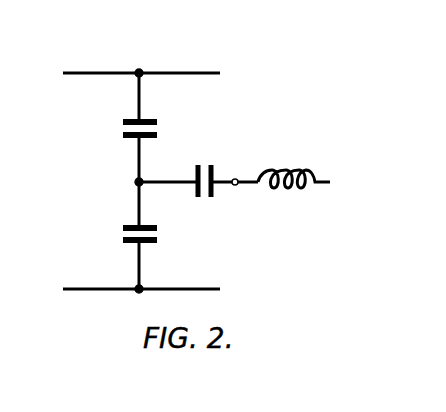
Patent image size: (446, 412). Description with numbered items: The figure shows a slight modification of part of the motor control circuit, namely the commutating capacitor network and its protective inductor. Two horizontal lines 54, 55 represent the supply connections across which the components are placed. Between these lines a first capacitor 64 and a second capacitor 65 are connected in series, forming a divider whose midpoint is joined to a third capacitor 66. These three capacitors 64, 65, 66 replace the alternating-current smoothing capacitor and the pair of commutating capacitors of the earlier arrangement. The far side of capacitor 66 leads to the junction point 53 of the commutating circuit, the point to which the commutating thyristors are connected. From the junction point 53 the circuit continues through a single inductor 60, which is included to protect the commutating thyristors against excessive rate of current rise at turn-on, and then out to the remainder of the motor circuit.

The junction point 53 is at (235, 178).
The first supply line 54 is at (187, 72).
The second supply line 55 is at (196, 288).
The inductor 60 is at (284, 170).
The capacitor 64 is at (122, 122).
The capacitor 65 is at (122, 227).
The capacitor 66 is at (200, 198).